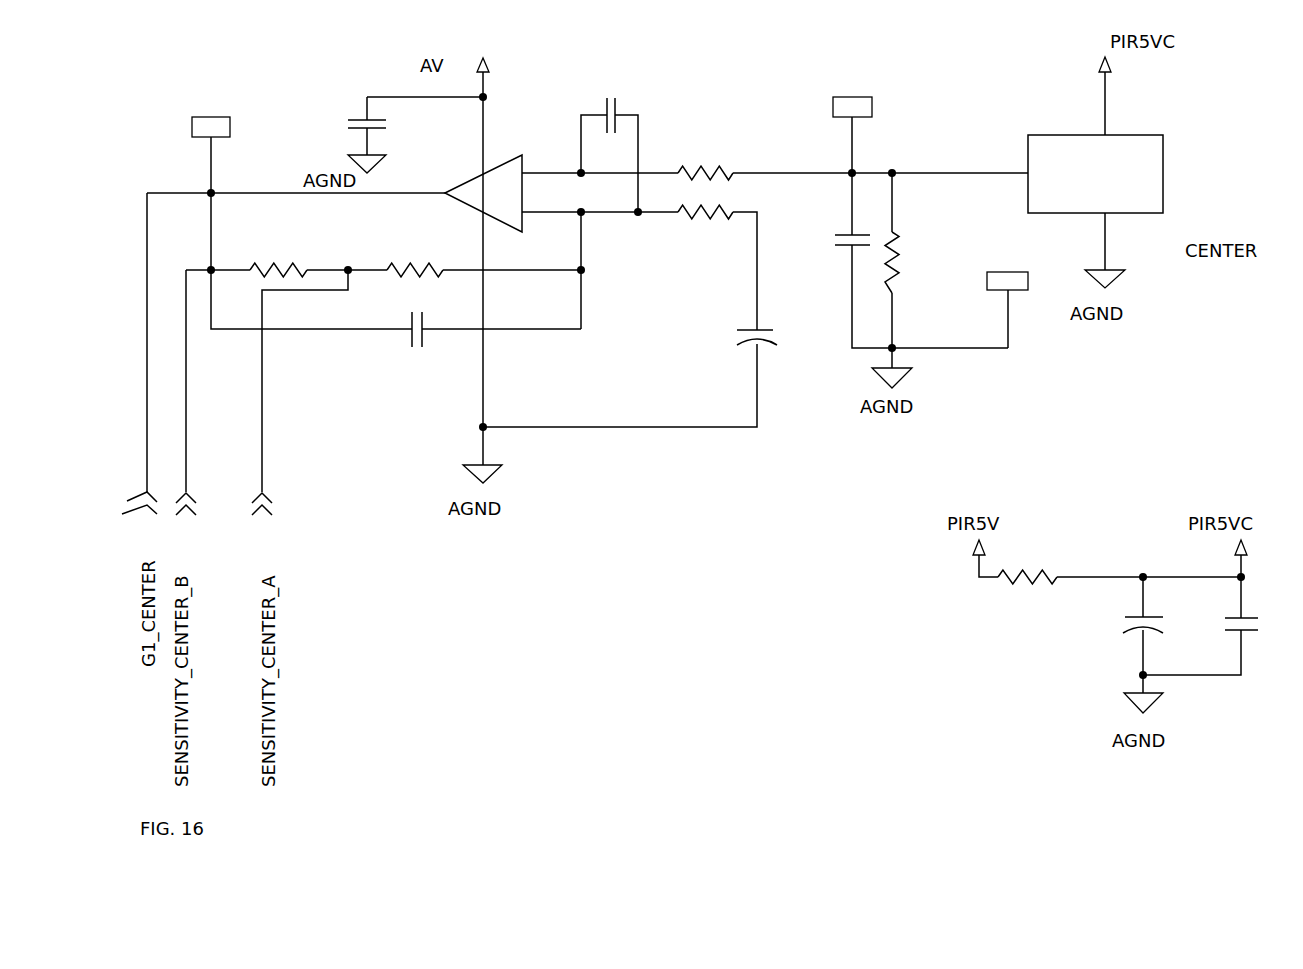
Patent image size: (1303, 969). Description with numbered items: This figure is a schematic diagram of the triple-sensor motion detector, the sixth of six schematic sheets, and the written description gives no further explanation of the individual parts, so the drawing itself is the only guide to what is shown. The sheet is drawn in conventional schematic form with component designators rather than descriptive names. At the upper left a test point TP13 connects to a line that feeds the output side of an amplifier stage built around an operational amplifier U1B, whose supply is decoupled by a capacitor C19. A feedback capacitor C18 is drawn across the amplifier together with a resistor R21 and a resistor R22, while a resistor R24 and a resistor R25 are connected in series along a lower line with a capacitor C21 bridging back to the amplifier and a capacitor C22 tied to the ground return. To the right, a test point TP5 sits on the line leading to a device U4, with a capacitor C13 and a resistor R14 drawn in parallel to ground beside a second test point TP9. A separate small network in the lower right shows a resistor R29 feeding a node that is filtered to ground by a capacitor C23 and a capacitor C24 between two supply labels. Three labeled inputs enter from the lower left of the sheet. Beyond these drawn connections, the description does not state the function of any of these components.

The test point TP13 is at (204, 142).
The capacitor C19 1.0uF C19 is at (334, 123).
The operational amplifier U1B LM358 U1B is at (473, 183).
The capacitor C18 0.01uF C18 is at (575, 94).
The resistor R21 18.2K R21 is at (700, 148).
The resistor R22 36.5K R22 is at (691, 228).
The resistor R24 1.05M R24 is at (274, 243).
The resistor R25 1.05M R25 is at (415, 243).
The capacitor C21 0.01uF C21 is at (399, 320).
The capacitor C22 10UF C22 is at (732, 341).
The test point TP5 is at (852, 96).
The capacitor C13 0.1uF C13 is at (830, 241).
The resistor R14 36.5K R14 is at (922, 261).
The test point TP9 is at (1007, 266).
The transistor/switch U4 is at (1084, 171).
The resistor R29 36.5K R29 is at (1023, 579).
The capacitor C23 100UF C23 is at (1112, 625).
The capacitor C24 0.1uF C24 is at (1216, 627).